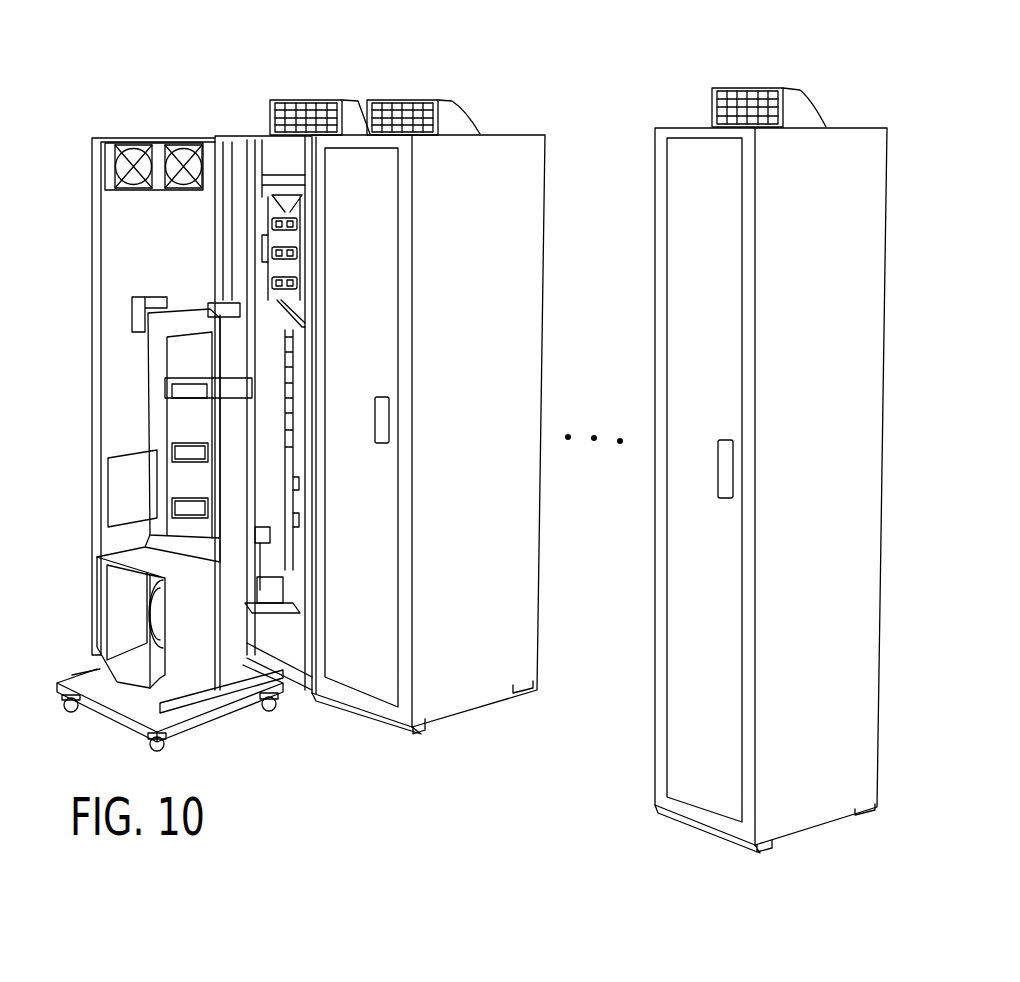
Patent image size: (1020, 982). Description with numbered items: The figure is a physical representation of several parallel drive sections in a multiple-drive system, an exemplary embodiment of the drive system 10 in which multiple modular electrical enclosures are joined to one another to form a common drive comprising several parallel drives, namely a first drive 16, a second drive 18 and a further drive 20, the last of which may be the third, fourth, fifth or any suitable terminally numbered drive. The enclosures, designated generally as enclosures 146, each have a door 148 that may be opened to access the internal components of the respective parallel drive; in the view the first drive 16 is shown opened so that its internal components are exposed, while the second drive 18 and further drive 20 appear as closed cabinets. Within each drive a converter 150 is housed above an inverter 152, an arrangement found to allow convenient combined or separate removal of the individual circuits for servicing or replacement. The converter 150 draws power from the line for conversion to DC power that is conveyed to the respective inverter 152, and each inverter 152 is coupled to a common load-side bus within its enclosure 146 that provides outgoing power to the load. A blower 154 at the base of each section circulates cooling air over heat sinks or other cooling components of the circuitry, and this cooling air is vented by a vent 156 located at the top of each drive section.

The drive system 10 is at (348, 765).
The first drive 16 is at (242, 133).
The second drive 18 is at (497, 135).
The further drive 20 is at (683, 127).
The enclosure 146 is at (297, 148).
The door 148 is at (117, 257).
The converter 150 is at (280, 198).
The inverter 152 is at (180, 475).
The blower 154 is at (118, 610).
The vent 156 is at (310, 100).